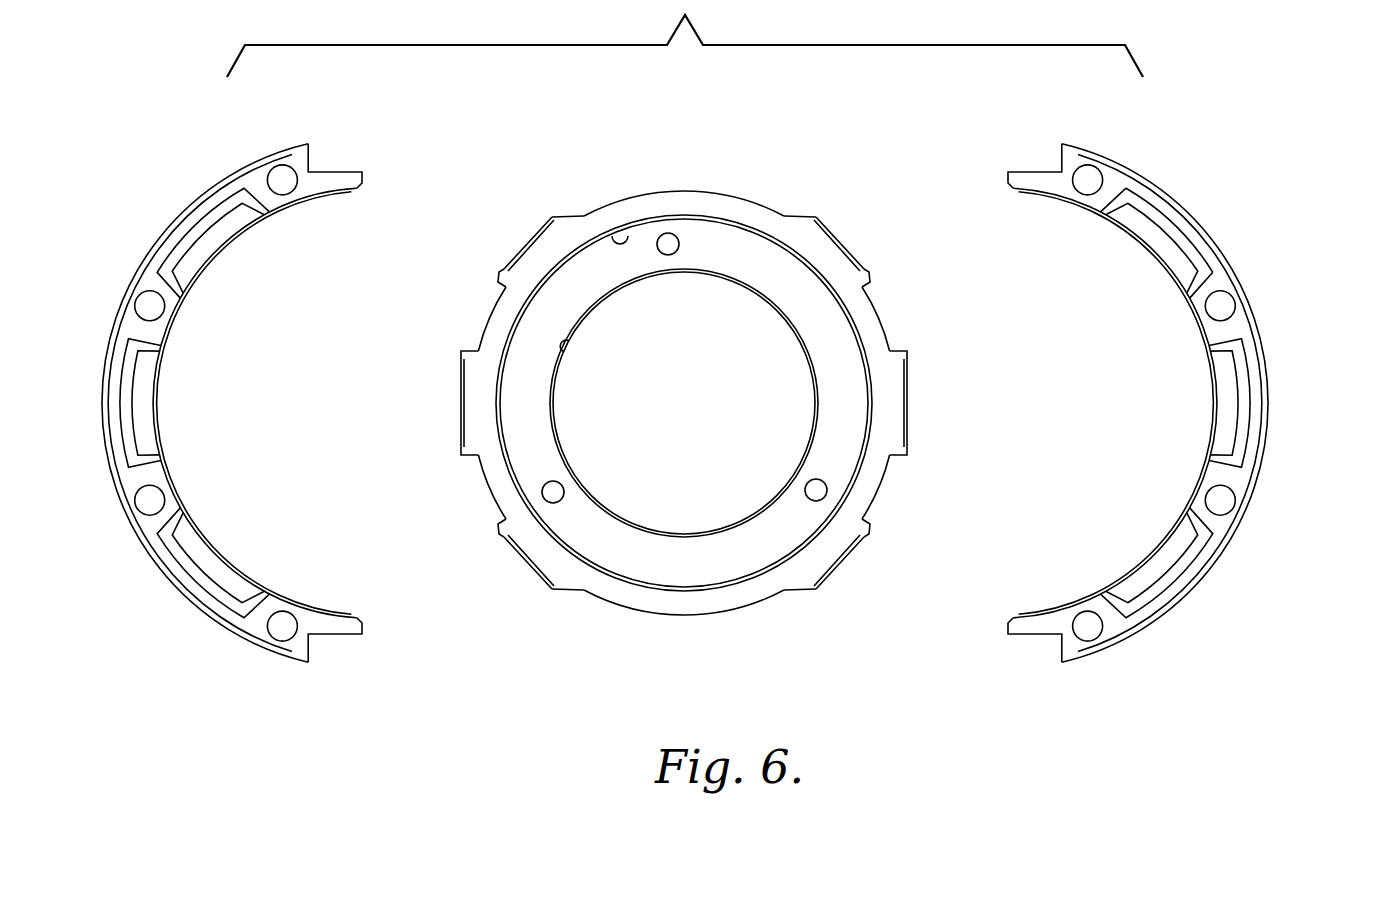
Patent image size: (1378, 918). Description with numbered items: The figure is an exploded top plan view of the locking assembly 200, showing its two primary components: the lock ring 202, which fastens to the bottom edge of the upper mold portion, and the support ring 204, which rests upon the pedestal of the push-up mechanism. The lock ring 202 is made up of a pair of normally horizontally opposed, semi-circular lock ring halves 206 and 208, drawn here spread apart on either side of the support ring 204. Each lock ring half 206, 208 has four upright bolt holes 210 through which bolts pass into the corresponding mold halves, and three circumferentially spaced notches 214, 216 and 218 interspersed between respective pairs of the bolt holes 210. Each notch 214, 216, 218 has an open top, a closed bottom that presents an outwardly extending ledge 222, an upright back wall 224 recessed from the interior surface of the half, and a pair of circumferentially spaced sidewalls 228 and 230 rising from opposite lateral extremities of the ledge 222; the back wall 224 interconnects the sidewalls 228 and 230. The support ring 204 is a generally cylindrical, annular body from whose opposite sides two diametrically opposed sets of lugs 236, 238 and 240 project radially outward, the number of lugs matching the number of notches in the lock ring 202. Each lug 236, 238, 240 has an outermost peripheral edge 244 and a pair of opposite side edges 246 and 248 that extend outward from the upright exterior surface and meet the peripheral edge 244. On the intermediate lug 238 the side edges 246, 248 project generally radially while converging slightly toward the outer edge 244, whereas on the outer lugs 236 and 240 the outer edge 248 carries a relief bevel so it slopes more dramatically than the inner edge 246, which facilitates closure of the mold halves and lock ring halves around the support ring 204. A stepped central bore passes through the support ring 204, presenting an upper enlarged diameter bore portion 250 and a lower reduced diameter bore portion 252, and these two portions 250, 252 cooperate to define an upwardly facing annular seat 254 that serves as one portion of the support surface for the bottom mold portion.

The locking assembly 200 is at (562, 688).
The lock ring 202 is at (1258, 286).
The support ring 204 is at (770, 186).
The lock ring half 206 is at (1174, 184).
The lock ring half 208 is at (188, 183).
The bolt holes 210 is at (282, 180).
The notch 214 is at (234, 545).
The notch 216 is at (170, 406).
The notch 218 is at (228, 266).
The ledge 222 is at (1140, 227).
The back wall 224 is at (1180, 243).
The sidewall 228 is at (1112, 195).
The sidewall 230 is at (1193, 295).
The lug 236 is at (848, 262).
The intermediate lug 238 is at (470, 408).
The lug 240 is at (541, 233).
The outermost peripheral edge 244 is at (512, 255).
The side edge 246 is at (497, 287).
The side edge 248 is at (572, 216).
The upper enlarged diameter bore portion 250 is at (627, 236).
The lower reduced diameter bore portion 252 is at (565, 343).
The annular seat 254 is at (548, 427).